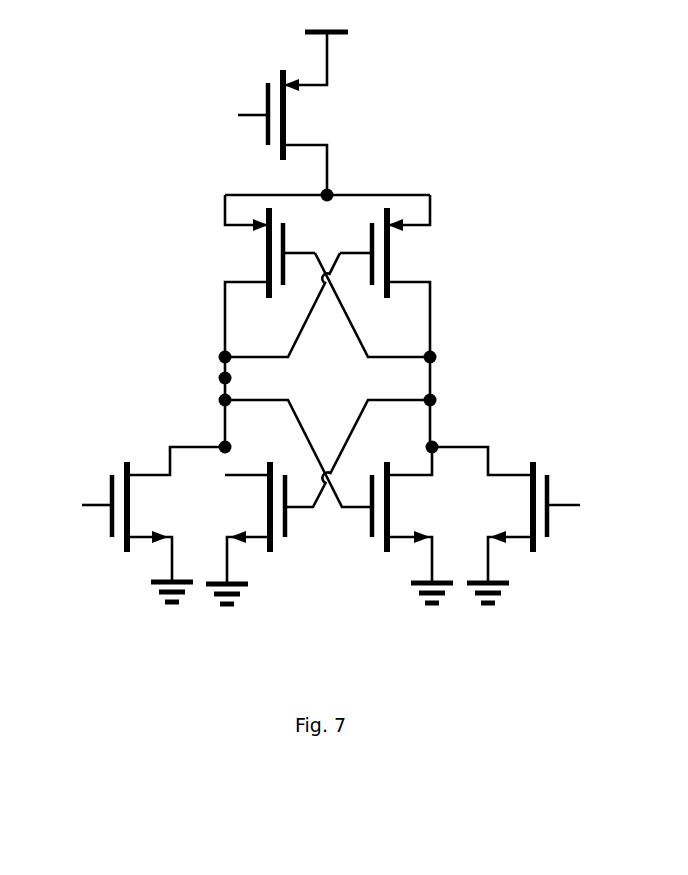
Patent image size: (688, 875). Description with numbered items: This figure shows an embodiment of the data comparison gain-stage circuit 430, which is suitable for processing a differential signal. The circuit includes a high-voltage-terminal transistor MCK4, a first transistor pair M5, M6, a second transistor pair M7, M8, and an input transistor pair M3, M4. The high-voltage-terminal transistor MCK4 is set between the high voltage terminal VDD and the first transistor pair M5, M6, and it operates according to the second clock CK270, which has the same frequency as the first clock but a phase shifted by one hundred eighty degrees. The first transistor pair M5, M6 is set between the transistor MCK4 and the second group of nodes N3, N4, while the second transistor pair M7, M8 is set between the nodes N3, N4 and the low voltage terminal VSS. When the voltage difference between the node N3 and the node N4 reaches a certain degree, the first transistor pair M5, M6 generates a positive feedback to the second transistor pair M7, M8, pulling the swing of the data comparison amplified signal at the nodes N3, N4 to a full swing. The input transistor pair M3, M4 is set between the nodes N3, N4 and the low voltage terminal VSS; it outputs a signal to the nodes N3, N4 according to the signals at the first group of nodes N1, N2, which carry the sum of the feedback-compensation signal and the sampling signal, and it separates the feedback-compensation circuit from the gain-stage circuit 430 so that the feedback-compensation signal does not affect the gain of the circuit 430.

The data comparison gain-stage circuit 430 is at (319, 344).
The high voltage terminal VDD is at (335, 54).
The low voltage terminal VSS is at (330, 610).
The high-voltage-terminal transistor MCK4 is at (306, 132).
The second clock CK270 is at (220, 107).
The first transistor pair transistor M5 is at (270, 321).
The first transistor pair transistor M6 is at (385, 321).
The input transistor pair transistor M3 is at (168, 514).
The second transistor pair transistor M7 is at (255, 523).
The second transistor pair transistor M8 is at (402, 515).
The input transistor pair transistor M4 is at (489, 515).
The first group node N1 is at (81, 508).
The first group node N2 is at (578, 508).
The second group node N3 is at (430, 357).
The second group node N4 is at (225, 378).